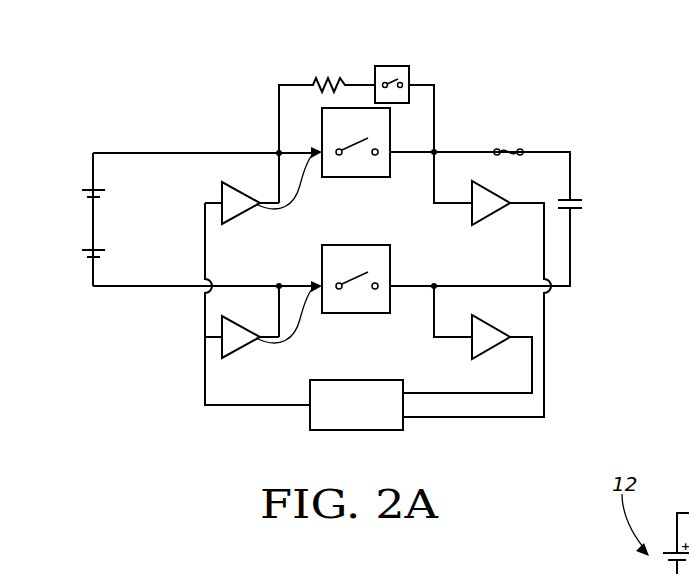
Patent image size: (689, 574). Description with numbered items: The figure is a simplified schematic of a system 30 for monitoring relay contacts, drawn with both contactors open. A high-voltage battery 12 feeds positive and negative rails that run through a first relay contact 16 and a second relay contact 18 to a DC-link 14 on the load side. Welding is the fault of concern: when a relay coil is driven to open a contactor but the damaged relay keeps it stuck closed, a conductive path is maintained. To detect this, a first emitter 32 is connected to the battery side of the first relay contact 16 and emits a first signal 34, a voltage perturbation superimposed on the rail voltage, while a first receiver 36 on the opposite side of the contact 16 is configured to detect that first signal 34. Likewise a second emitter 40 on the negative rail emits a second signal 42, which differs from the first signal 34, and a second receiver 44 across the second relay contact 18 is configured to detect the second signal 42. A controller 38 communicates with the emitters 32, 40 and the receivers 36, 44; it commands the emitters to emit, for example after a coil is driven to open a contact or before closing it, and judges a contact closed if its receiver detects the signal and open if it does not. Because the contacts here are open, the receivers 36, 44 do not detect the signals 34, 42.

The high voltage battery 12 is at (56, 177).
The DC link capacitor 14 is at (586, 177).
The first relay contact 16 is at (353, 177).
The second relay contact 18 is at (400, 263).
The system 30 is at (170, 56).
The first emitter 32 is at (243, 187).
The first signal 34 is at (293, 163).
The first receiver 36 is at (490, 188).
The controller 38 is at (308, 417).
The second emitter 40 is at (240, 348).
The second signal 42 is at (293, 298).
The second receiver 44 is at (472, 348).